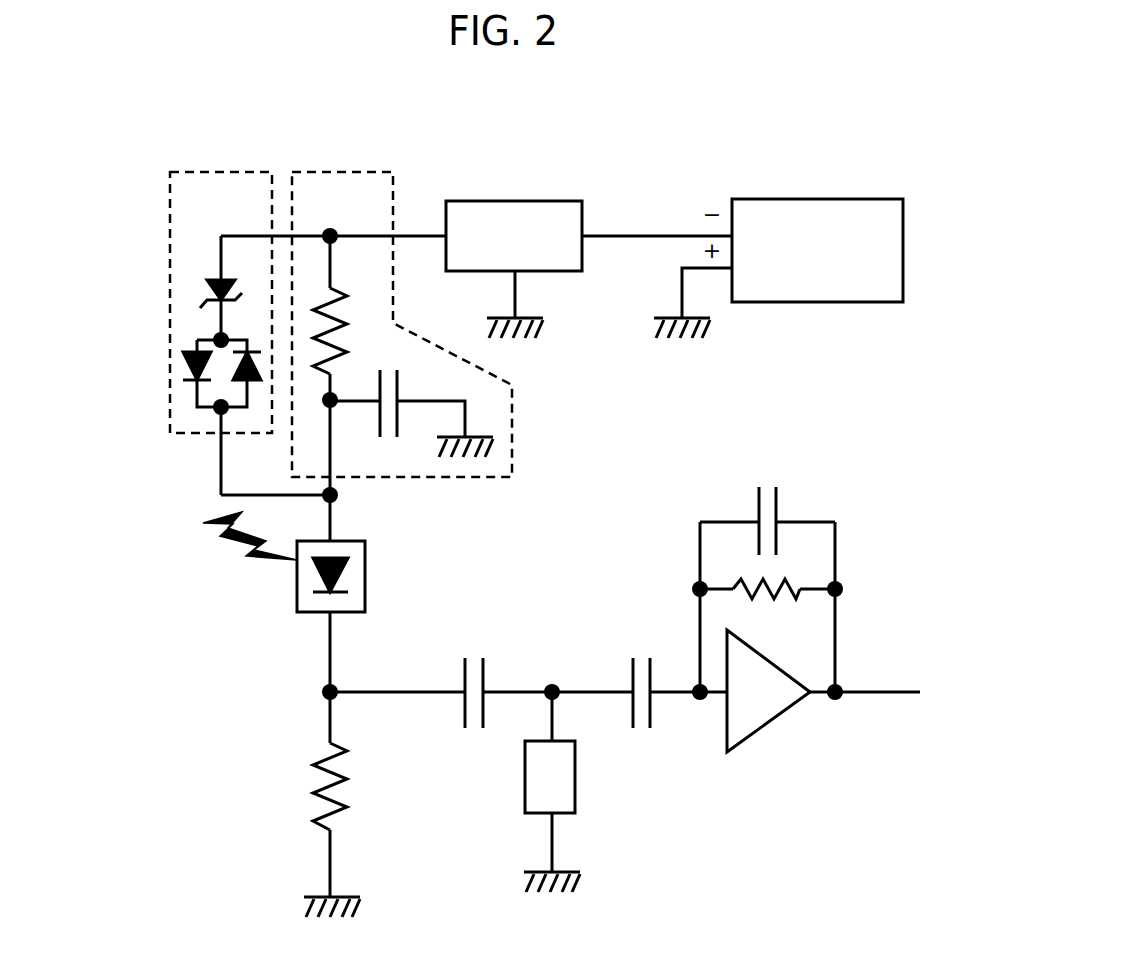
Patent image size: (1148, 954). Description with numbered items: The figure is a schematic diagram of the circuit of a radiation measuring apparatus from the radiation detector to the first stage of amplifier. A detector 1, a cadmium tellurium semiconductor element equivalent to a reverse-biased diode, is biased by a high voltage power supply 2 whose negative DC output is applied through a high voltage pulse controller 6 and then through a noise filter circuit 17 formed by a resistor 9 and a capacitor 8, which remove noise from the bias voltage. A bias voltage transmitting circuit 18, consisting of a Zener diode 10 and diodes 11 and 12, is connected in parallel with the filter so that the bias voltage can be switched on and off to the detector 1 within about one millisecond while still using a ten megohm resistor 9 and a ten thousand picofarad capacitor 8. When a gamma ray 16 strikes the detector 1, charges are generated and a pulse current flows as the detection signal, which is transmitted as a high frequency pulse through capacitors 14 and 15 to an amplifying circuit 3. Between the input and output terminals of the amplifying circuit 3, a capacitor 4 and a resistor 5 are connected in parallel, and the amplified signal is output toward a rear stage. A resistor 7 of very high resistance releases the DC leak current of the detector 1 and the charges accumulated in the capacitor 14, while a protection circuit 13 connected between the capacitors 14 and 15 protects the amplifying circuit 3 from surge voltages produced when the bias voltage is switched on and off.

The detector 1 is at (297, 582).
The high voltage power supply 2 is at (812, 199).
The amplifying circuit 3 is at (780, 707).
The capacitor 4 is at (766, 480).
The resistor 5 is at (800, 582).
The high voltage pulse controller 6 is at (515, 201).
The resistor 7 is at (320, 790).
The capacitor 8 is at (408, 437).
The resistor 9 is at (360, 345).
The Zener diode 10 is at (200, 305).
The diode 11 is at (172, 364).
The diode 12 is at (218, 388).
The protection circuit 13 is at (578, 798).
The capacitor 14 is at (472, 655).
The capacitor 15 is at (642, 655).
The radiation ray 16 is at (205, 535).
The noise filter circuit 17 is at (342, 172).
The bias voltage transmitting circuit 18 is at (212, 172).